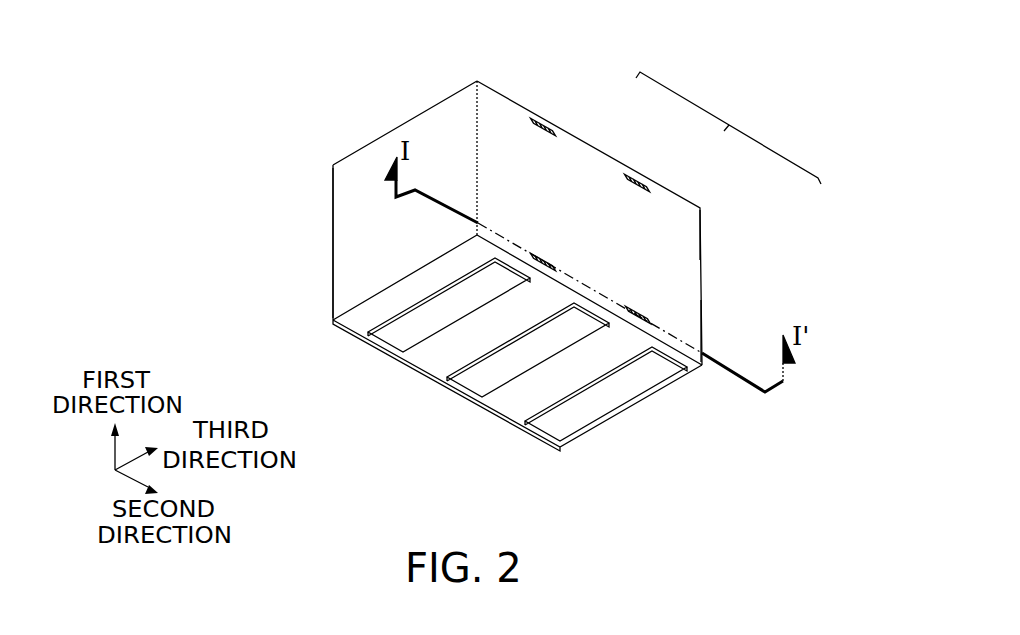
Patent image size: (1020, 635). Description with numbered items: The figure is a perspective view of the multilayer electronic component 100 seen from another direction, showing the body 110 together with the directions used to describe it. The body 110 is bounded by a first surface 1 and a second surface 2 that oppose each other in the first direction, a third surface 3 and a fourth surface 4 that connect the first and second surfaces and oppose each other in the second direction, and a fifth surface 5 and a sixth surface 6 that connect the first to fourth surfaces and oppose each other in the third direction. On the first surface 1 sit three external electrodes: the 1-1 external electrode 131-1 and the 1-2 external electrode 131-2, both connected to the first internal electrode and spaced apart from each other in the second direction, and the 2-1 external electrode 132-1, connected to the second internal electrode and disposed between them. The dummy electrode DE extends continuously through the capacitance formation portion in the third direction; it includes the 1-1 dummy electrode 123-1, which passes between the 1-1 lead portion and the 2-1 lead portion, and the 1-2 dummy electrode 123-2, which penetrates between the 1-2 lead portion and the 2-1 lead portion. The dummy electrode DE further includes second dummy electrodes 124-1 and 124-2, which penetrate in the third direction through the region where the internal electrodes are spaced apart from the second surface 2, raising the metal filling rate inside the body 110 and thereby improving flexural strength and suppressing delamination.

The multilayer electronic component 100 is at (321, 46).
The body 110 is at (346, 223).
The first surface 1 is at (358, 322).
The second surface 2 is at (512, 101).
The third surface 3 is at (369, 171).
The fourth surface 4 is at (703, 297).
The fifth surface 5 is at (333, 275).
The sixth surface 6 is at (693, 252).
The second dummy electrode 124-1 is at (552, 123).
The second dummy electrode 124-2 is at (648, 183).
The 1-1 dummy electrode 123-1 is at (555, 262).
The 1-2 dummy electrode 123-2 is at (650, 318).
The 1-1 external electrode 131-1 is at (405, 338).
The 2-1 external electrode 132-1 is at (485, 383).
The 1-2 external electrode 131-2 is at (562, 428).
The dummy electrode DE is at (728, 128).